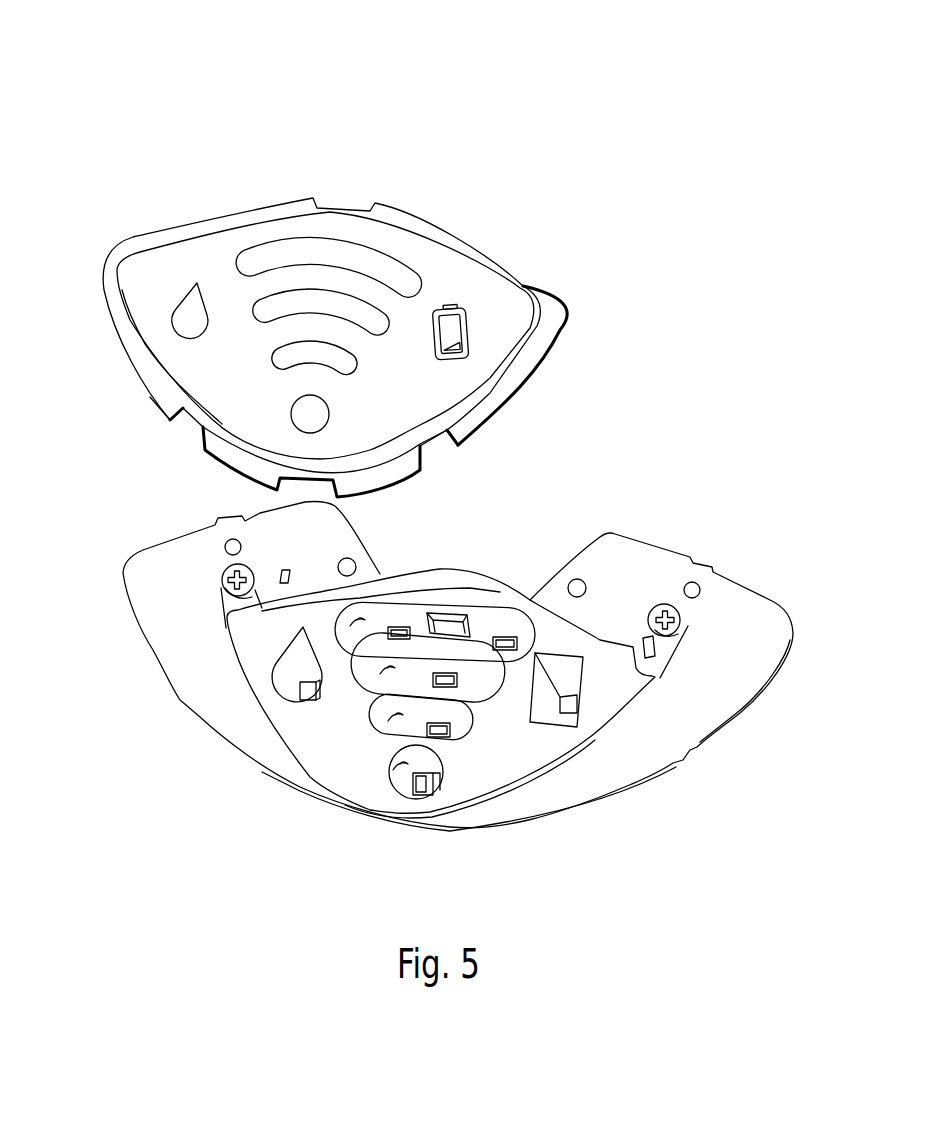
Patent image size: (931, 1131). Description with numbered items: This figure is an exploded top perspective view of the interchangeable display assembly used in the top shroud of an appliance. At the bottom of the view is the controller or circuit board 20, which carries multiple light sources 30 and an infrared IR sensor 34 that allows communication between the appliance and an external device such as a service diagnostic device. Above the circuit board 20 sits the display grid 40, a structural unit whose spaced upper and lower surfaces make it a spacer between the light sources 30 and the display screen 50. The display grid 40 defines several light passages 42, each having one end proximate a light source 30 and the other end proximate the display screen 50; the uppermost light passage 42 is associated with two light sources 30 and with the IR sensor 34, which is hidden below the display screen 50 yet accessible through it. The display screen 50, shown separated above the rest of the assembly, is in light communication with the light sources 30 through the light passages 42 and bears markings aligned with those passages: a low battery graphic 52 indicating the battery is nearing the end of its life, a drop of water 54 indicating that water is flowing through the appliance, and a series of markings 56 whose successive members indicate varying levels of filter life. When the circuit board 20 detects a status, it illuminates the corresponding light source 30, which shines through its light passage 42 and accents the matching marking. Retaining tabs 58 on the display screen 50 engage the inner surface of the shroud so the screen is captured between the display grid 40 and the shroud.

The circuit board 20 is at (738, 620).
The light sources 30 is at (505, 645).
The IR sensor 34 is at (455, 630).
The display grid 40 is at (570, 775).
The light passages 42 is at (357, 624).
The display screen 50 is at (402, 153).
The low battery graphic 52 is at (457, 318).
The drop of water 54 is at (190, 300).
The series of markings 56 is at (317, 410).
The retaining tabs 58 is at (227, 453).